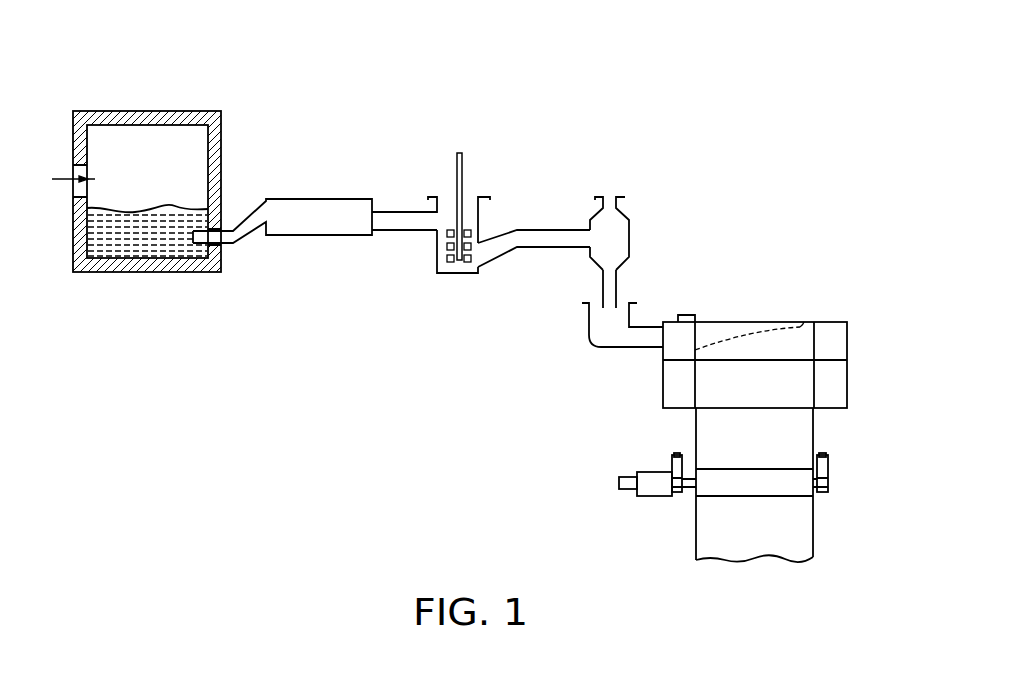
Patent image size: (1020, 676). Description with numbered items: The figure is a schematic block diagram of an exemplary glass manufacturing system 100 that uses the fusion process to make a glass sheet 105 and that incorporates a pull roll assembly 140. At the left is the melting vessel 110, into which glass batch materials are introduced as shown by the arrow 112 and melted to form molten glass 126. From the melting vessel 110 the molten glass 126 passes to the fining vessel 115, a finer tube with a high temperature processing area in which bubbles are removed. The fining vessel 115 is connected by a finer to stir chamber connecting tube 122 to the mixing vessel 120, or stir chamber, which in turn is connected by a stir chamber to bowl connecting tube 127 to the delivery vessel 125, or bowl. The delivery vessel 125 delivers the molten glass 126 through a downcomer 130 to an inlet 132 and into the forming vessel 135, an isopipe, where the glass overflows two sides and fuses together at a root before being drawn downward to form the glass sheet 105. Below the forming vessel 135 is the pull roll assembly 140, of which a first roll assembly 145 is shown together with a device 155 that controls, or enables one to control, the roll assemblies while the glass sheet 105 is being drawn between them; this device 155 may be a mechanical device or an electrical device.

The glass manufacturing system 100 is at (733, 88).
The glass sheet 105 is at (695, 534).
The melting vessel 110 is at (148, 110).
The arrow 112 is at (62, 180).
The fining vessel 115 is at (300, 197).
The mixing vessel 120 is at (481, 214).
The finer to stir chamber connecting tube 122 is at (415, 234).
The delivery vessel 125 is at (630, 227).
The molten glass 126 is at (168, 203).
The stir chamber to bowl connecting tube 127 is at (558, 252).
The downcomer 130 is at (617, 285).
The inlet 132 is at (593, 344).
The forming vessel 135 is at (847, 338).
The pull roll assembly 140 is at (858, 493).
The first roll assembly 145 is at (672, 462).
The device 155 is at (632, 492).